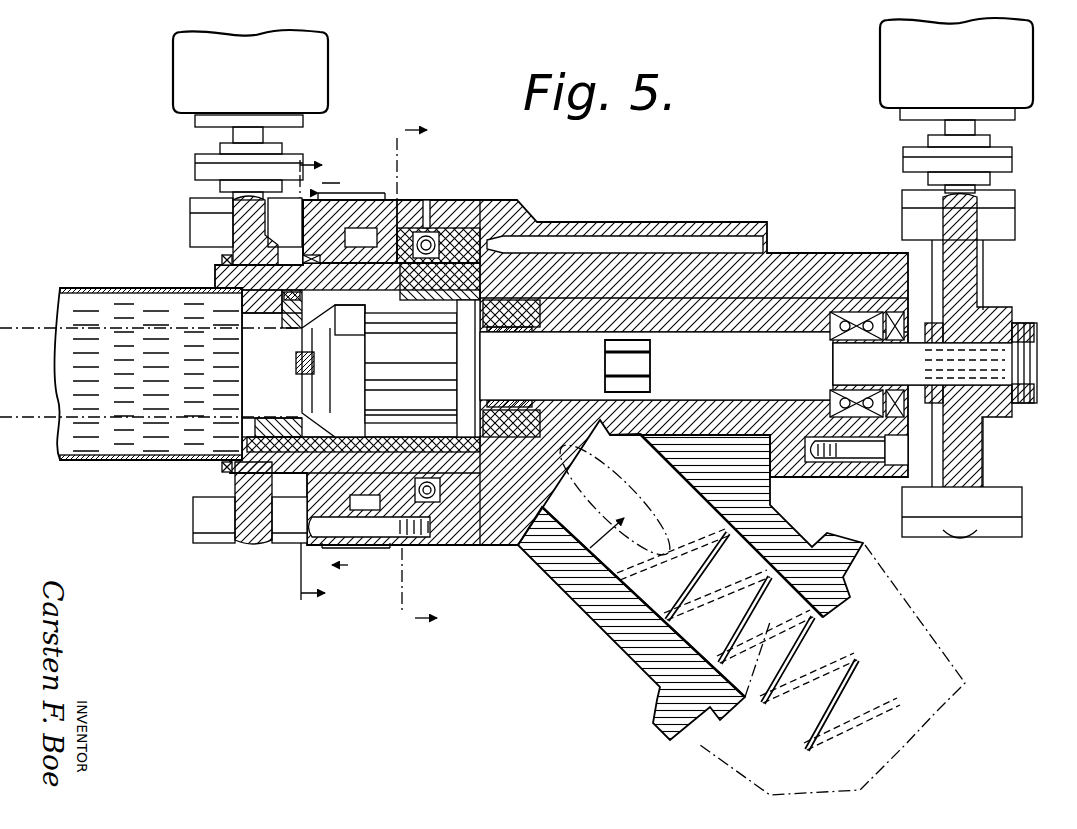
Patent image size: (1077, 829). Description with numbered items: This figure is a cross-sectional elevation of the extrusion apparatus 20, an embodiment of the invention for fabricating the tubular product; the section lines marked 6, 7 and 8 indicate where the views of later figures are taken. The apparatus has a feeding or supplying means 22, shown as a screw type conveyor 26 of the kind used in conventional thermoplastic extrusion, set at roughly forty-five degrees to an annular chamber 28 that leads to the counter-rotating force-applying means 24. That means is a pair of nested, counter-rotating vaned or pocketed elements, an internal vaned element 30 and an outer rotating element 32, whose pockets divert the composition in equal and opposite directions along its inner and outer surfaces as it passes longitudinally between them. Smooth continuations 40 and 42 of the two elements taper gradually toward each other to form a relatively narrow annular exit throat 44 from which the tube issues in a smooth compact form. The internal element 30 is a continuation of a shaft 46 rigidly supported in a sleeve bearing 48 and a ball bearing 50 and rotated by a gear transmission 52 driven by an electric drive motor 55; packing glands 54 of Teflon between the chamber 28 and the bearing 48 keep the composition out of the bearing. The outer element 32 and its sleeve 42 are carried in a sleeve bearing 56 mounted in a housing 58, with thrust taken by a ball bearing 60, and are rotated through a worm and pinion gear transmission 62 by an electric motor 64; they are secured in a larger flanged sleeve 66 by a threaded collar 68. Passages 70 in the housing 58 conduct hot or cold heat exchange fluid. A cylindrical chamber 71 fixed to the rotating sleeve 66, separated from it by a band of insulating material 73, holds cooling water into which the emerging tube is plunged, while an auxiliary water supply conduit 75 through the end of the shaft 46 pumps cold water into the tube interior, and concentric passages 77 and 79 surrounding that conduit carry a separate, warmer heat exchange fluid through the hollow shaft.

The section line 6- 6 is at (411, 375).
The section line 7- 7 is at (354, 377).
The section line 8- 8 is at (308, 380).
The extrusion apparatus 20 is at (630, 222).
The feeding or supplying means 22 is at (572, 577).
The counter-rotating force-applying means 24 is at (411, 368).
The screw type conveyor 26 is at (792, 736).
The annular chamber 28 is at (470, 312).
The internal vaned element 30 is at (380, 372).
The outer rotating element 32 is at (350, 333).
The smooth continuation of element 30 40 is at (340, 306).
The smooth continuation of element 32 42 is at (363, 455).
The annular exit throat 44 is at (290, 328).
The shaft 46 is at (746, 366).
The sleeve bearing 48 is at (535, 322).
The ball bearing 50 is at (862, 312).
The gear transmission 52 is at (985, 265).
The packing glands 54 is at (483, 292).
The electric drive motor 55 is at (886, 62).
The sleeve bearing 56 is at (345, 256).
The housing 58 is at (360, 213).
The ball bearing 60 is at (430, 222).
The worm and pinion gear transmission 62 is at (230, 212).
The electric motor 64 is at (313, 63).
The flanged sleeve 66 is at (434, 281).
The threaded collar 68 is at (243, 320).
The passages 70 is at (400, 215).
The cylindrical chamber 71 is at (122, 288).
The separating band of insulating material 73 is at (243, 338).
The auxiliary water supply conduit 75 is at (297, 365).
The concentric passage 77 is at (605, 355).
The concentric passage 79 is at (642, 346).